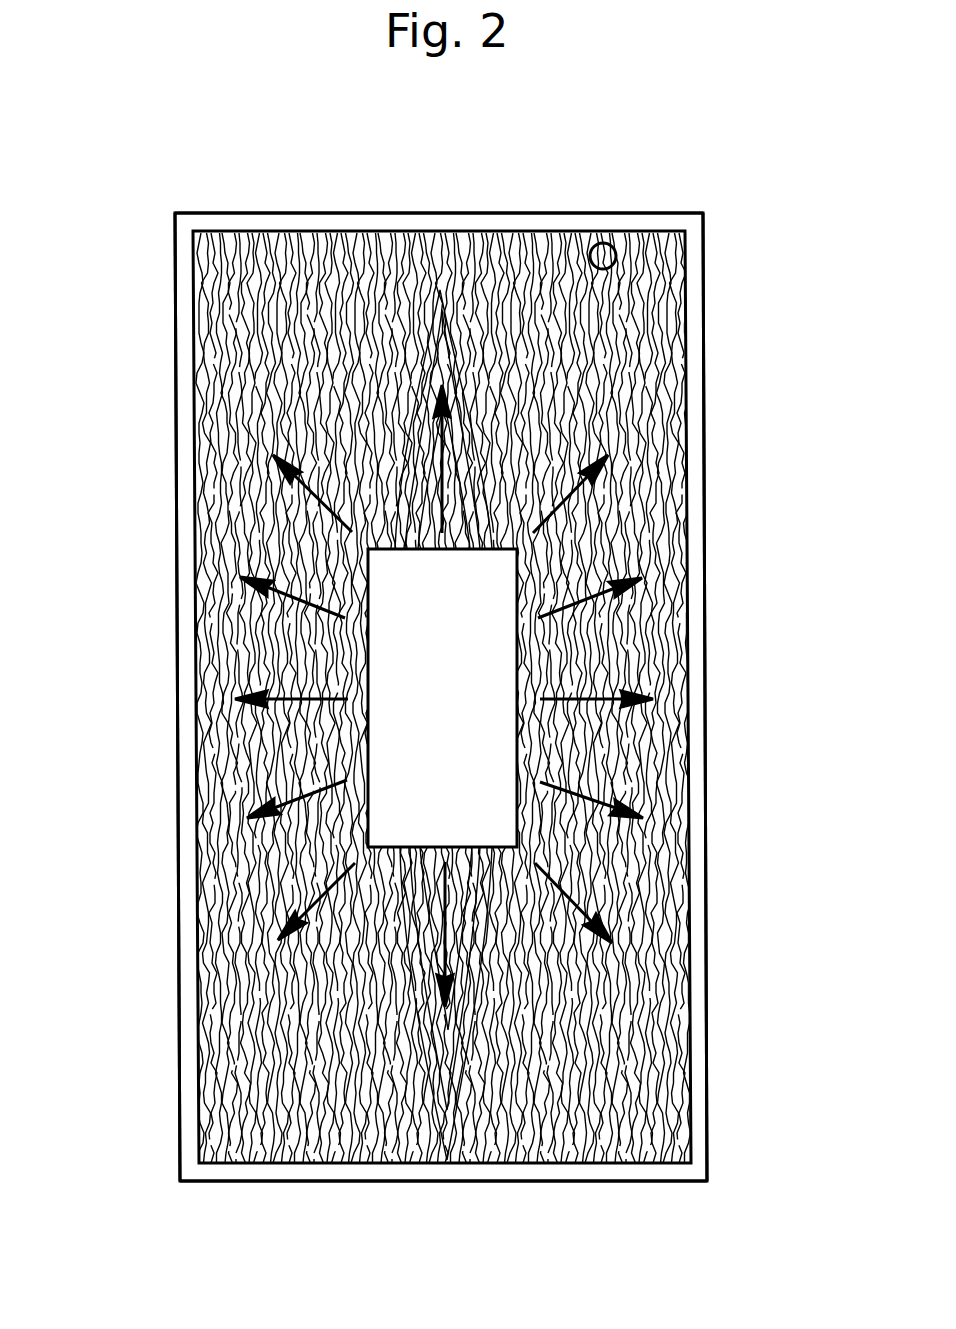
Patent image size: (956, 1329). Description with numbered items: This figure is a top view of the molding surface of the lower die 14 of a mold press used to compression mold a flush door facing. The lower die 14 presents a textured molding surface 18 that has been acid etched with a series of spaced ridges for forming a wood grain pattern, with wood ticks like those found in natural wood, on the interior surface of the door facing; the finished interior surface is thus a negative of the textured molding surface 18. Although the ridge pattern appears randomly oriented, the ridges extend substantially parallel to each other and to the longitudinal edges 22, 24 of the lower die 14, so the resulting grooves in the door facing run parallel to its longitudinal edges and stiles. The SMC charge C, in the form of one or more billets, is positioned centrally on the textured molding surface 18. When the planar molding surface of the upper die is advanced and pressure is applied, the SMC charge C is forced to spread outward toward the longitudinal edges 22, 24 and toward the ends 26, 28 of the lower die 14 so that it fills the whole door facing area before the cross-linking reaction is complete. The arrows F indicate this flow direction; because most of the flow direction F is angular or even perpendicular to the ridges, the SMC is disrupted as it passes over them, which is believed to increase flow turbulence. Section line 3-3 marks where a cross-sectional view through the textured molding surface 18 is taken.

The lower die 14 is at (727, 411).
The textured molding surface 18 is at (668, 880).
The longitudinal edge 22 is at (705, 937).
The longitudinal edge 24 is at (178, 937).
The end 26 is at (440, 213).
The end 28 is at (445, 1182).
The section line 3-3 is at (603, 243).
The flow direction arrows F is at (290, 600).
The SMC charge C is at (452, 710).